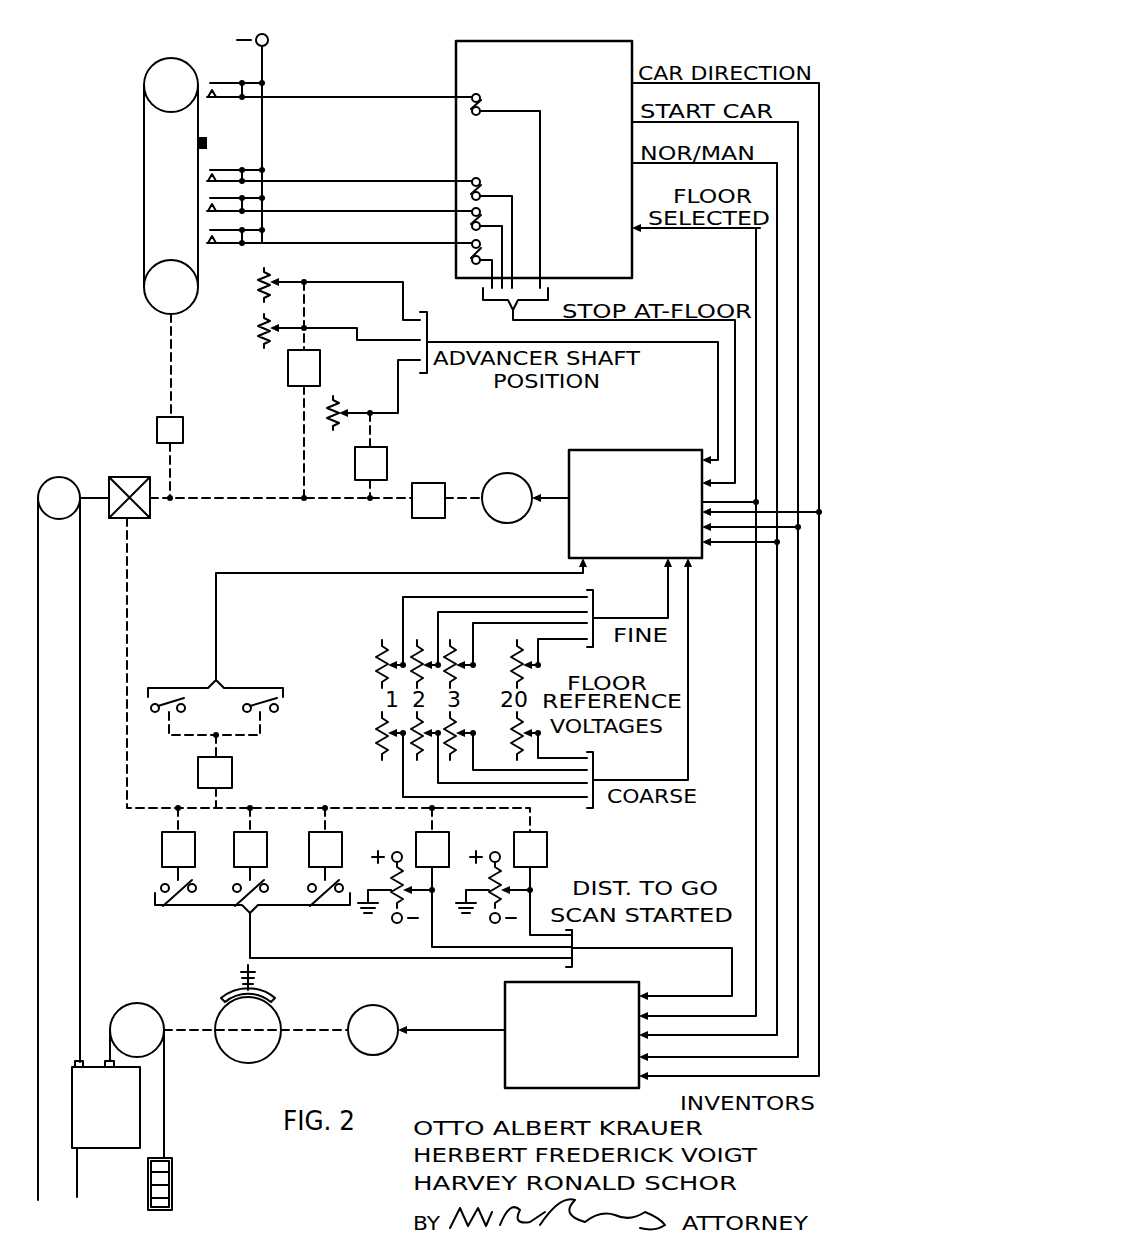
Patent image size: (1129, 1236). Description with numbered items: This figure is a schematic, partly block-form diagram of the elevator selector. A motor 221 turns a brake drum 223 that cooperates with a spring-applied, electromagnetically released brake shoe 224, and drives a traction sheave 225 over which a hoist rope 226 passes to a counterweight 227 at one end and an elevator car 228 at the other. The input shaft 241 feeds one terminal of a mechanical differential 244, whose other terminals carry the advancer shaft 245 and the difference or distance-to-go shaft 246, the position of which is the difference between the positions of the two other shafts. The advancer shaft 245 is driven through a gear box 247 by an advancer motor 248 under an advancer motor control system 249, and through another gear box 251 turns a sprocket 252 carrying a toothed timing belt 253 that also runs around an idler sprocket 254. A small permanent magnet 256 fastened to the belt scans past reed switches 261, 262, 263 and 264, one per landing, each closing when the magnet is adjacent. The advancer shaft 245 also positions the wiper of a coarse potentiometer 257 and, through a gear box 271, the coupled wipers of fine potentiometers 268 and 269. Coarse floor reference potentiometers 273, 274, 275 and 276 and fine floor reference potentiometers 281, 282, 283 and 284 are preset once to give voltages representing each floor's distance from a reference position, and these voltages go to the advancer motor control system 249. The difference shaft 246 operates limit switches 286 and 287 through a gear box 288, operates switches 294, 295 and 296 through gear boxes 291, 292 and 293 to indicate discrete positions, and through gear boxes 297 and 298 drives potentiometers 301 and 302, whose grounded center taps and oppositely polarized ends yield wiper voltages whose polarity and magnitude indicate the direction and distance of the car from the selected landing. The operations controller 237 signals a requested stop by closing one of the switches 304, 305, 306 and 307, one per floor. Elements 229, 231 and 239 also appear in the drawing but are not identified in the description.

The motor 221 is at (390, 1050).
The brake drum 223 is at (272, 1058).
The brake shoe 224 is at (262, 1000).
The traction sheave 225 is at (140, 1000).
The hoist rope 226 is at (165, 1108).
The counterweight 227 is at (176, 1170).
The elevator car 228 is at (100, 1148).
The governor rope 229 is at (79, 940).
The governor sheave 231 is at (59, 477).
The operations controller 237 is at (604, 41).
The hoist motor control system 239 is at (505, 1003).
The input shaft 241 is at (85, 499).
The mechanical differential 244 is at (127, 477).
The advancer shaft 245 is at (244, 500).
The difference shaft 246 is at (127, 587).
The gear box 247 is at (437, 483).
The advancer motor 248 is at (513, 466).
The advancer motor control system 249 is at (640, 450).
The gear box 251 is at (183, 430).
The sprocket 252 is at (147, 298).
The timing belt 253 is at (144, 196).
The idler sprocket 254 is at (160, 62).
The permanent magnet 256 is at (199, 148).
The potentiometer 257 is at (344, 392).
The switch 261 is at (237, 244).
The switch 262 is at (262, 212).
The switch 263 is at (262, 170).
The switch 264 is at (262, 83).
The potentiometer 268 is at (258, 328).
The potentiometer 269 is at (258, 283).
The gear box 271 is at (288, 368).
The potentiometer 273 is at (376, 745).
The potentiometer 274 is at (413, 742).
The potentiometer 275 is at (448, 742).
The potentiometer 276 is at (519, 745).
The potentiometer 281 is at (378, 650).
The potentiometer 282 is at (413, 650).
The potentiometer 283 is at (452, 645).
The potentiometer 284 is at (510, 650).
The switch 286 is at (175, 700).
The switch 287 is at (258, 700).
The gear box 288 is at (198, 770).
The gear box 291 is at (162, 840).
The gear box 292 is at (234, 840).
The gear box 293 is at (309, 840).
The switch 294 is at (166, 906).
The switch 295 is at (234, 906).
The switch 296 is at (309, 906).
The gear box 297 is at (449, 845).
The gear box 298 is at (547, 858).
The potentiometer 301 is at (393, 902).
The potentiometer 302 is at (492, 902).
The switch 304 is at (471, 255).
The switch 305 is at (471, 222).
The switch 306 is at (471, 190).
The switch 307 is at (471, 104).